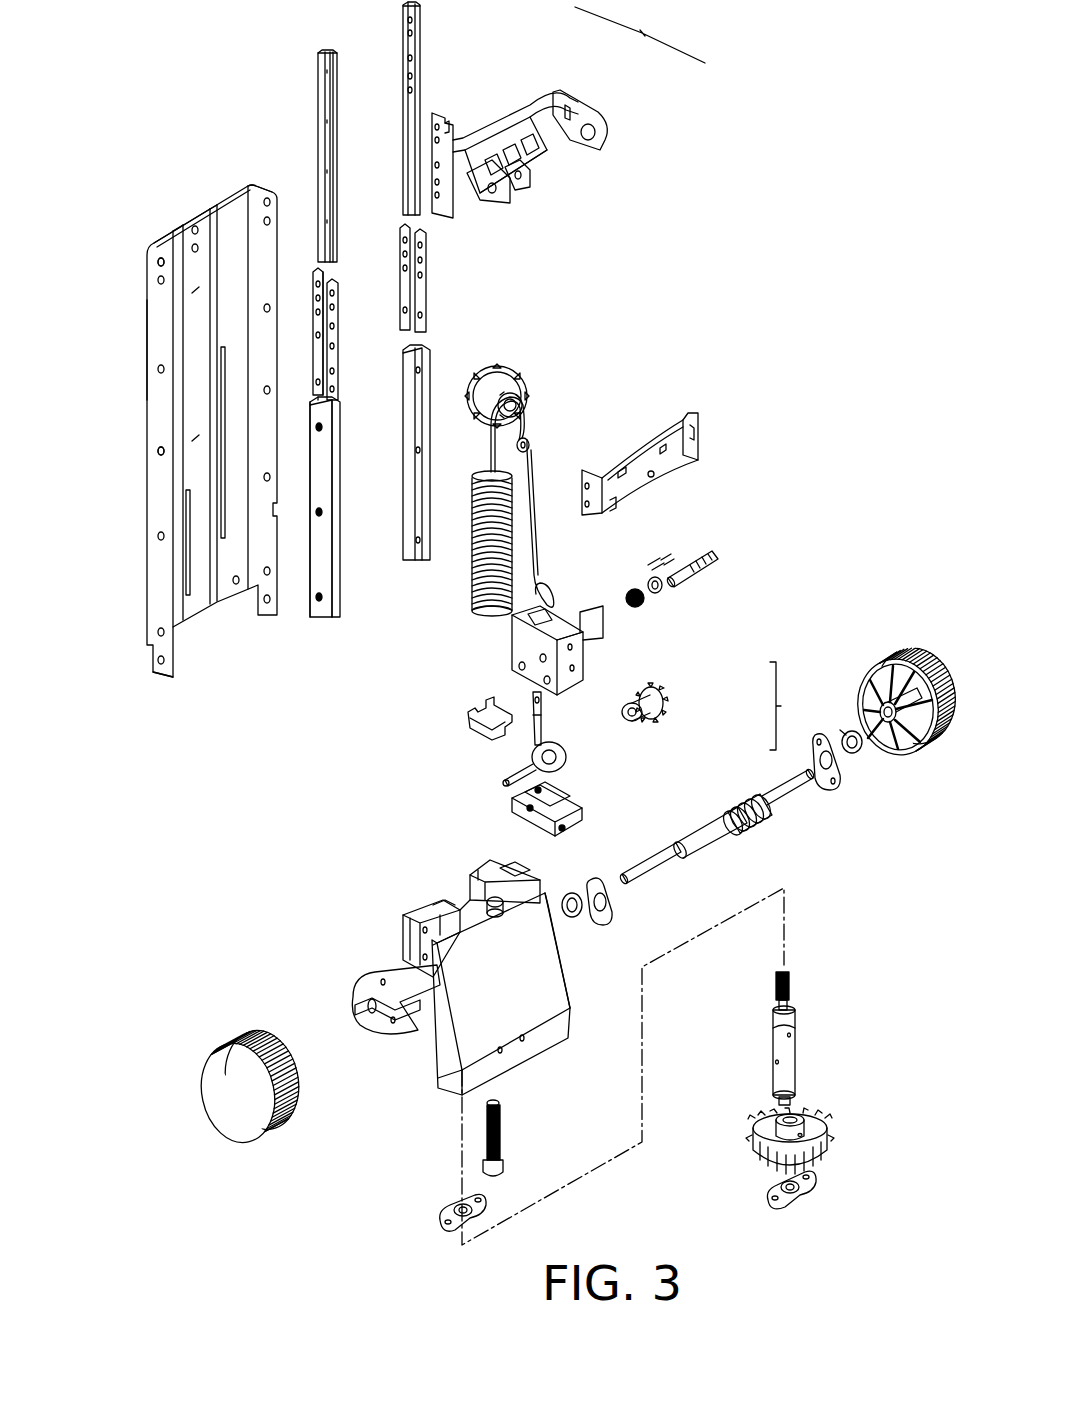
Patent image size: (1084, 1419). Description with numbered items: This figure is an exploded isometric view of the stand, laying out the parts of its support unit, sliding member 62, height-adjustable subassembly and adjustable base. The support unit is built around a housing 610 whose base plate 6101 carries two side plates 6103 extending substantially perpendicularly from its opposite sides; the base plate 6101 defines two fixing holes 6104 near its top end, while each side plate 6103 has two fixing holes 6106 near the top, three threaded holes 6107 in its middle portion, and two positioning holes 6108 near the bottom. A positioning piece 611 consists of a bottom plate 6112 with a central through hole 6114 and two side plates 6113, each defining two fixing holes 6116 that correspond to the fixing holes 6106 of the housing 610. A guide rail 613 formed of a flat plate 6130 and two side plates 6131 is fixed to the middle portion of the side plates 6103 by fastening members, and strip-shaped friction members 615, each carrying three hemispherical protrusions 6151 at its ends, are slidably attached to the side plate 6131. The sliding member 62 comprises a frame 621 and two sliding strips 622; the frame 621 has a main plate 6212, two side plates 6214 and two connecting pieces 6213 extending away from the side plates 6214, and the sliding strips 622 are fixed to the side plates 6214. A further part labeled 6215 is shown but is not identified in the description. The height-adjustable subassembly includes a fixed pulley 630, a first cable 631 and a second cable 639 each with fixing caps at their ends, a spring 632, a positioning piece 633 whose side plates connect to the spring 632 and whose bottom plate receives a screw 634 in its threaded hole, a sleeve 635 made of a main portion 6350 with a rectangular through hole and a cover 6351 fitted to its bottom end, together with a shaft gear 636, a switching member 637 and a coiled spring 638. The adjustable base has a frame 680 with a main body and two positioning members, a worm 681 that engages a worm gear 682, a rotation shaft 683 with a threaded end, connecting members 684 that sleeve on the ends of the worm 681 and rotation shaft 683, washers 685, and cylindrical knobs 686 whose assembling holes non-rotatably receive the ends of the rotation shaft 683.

The sliding member 62 is at (640, 34).
The housing 610 is at (147, 237).
The base plate 6101 is at (237, 198).
The side plates 6103 is at (160, 342).
The fixing holes 6104 is at (190, 220).
The fixing holes 6106 is at (157, 262).
The threaded holes 6107 is at (157, 451).
The positioning holes 6108 is at (163, 662).
The positioning piece 611 is at (681, 467).
The bottom plate 6112 is at (675, 458).
The side plates 6113 is at (590, 470).
The through hole 6114 is at (655, 478).
The fixing holes 6116 is at (585, 516).
The guide rail 613 is at (348, 605).
The flat plate 6130 is at (325, 560).
The side plates 6131 is at (338, 620).
The friction members 615 is at (338, 320).
The hemispherical protrusions 6151 is at (428, 312).
The frame 621 is at (563, 148).
The main plate 6212 is at (535, 160).
The connecting pieces 6213 is at (600, 140).
The side plates 6214 is at (450, 195).
The lower rail segment 6215 is at (440, 222).
The sliding strips 622 is at (441, 57).
The fixed pulley 630 is at (525, 375).
The first cable 631 is at (490, 448).
The spring 632 is at (488, 620).
The positioning piece 633 is at (470, 725).
The screw 634 is at (505, 1125).
The sleeve 635 is at (604, 721).
The main portion 6350 is at (590, 655).
The cover 6351 is at (590, 800).
The shaft gear 636 is at (628, 715).
The switching member 637 is at (720, 583).
The coiled spring 638 is at (566, 757).
The second cable 639 is at (535, 455).
The frame 680 is at (437, 1043).
The worm 681 is at (700, 840).
The worm gear 682 is at (825, 1118).
The rotation shaft 683 is at (790, 1057).
The connecting members 684 is at (835, 792).
The washers 685 is at (857, 755).
The knobs 686 is at (925, 745).